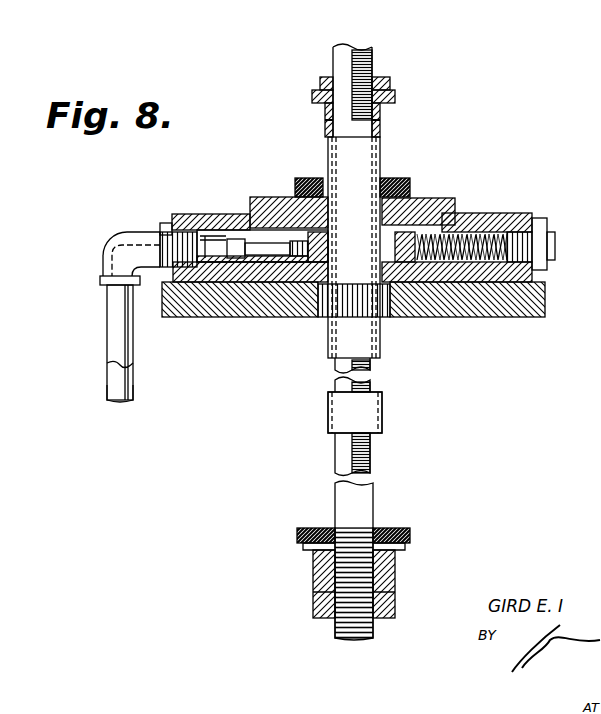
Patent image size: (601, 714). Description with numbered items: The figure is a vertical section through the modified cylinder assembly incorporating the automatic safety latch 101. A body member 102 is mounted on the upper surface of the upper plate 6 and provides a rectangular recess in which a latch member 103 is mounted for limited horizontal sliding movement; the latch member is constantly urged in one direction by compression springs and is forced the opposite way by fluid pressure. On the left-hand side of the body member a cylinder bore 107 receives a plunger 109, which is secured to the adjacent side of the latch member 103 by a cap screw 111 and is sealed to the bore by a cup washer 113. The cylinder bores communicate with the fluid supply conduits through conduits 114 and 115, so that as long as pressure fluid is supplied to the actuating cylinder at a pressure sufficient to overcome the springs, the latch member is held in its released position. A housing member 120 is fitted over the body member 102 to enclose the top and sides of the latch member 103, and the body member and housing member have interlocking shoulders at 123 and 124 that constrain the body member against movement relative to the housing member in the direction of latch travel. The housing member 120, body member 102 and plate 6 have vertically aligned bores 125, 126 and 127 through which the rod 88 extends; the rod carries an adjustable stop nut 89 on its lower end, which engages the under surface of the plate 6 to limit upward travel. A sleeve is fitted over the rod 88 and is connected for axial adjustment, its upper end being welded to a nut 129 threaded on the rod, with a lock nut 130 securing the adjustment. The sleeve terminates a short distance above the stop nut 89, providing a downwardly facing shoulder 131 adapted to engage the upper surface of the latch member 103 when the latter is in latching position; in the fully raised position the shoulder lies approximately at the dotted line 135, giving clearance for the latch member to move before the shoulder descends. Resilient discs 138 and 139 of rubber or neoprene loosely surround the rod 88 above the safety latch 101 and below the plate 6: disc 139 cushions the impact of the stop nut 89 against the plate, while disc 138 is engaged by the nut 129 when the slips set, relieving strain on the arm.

The upper plate 6 is at (540, 298).
The rod 88 is at (375, 458).
The stop nut 89 is at (396, 580).
The automatic safety latch 101 is at (546, 215).
The body member 102 is at (467, 274).
The latch member 103 is at (300, 258).
The cylinder bore 107 is at (210, 235).
The plunger 109 is at (272, 236).
The cap screw 111 is at (248, 256).
The cup washer 113 is at (222, 264).
The conduit 114 is at (120, 380).
The conduit 115 is at (120, 324).
The housing member 120 is at (452, 212).
The interlocking shoulder 123 is at (250, 230).
The interlocking shoulder 124 is at (450, 228).
The bore 125 is at (382, 218).
The bore 126 is at (382, 278).
The bore 127 is at (390, 307).
The nut 129 is at (396, 97).
The lock nut 130 is at (378, 82).
The shoulder 131 is at (330, 430).
The dotted line 135 is at (360, 165).
The resilient disc 138 is at (405, 191).
The resilient disc 139 is at (396, 528).